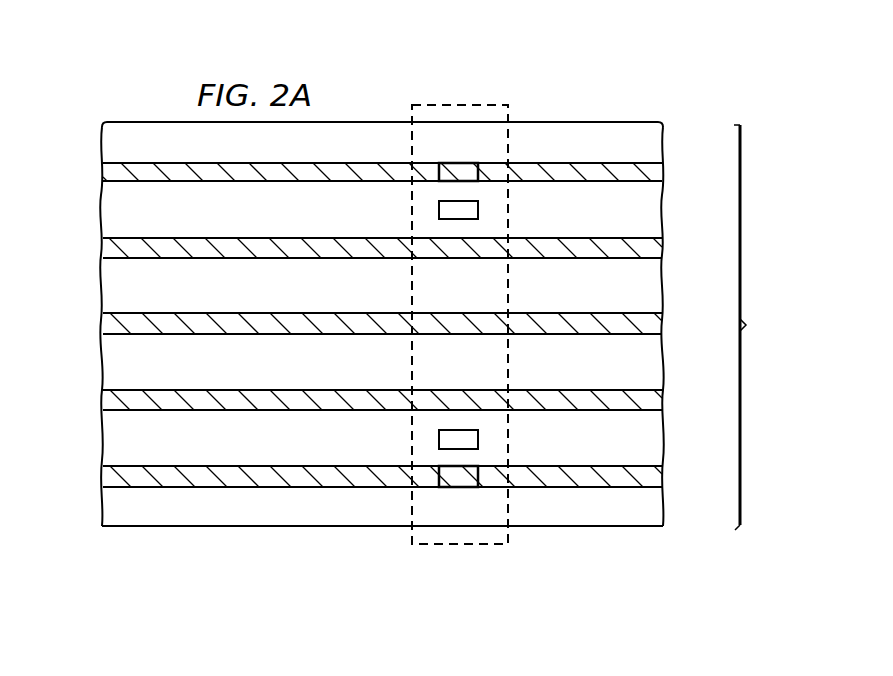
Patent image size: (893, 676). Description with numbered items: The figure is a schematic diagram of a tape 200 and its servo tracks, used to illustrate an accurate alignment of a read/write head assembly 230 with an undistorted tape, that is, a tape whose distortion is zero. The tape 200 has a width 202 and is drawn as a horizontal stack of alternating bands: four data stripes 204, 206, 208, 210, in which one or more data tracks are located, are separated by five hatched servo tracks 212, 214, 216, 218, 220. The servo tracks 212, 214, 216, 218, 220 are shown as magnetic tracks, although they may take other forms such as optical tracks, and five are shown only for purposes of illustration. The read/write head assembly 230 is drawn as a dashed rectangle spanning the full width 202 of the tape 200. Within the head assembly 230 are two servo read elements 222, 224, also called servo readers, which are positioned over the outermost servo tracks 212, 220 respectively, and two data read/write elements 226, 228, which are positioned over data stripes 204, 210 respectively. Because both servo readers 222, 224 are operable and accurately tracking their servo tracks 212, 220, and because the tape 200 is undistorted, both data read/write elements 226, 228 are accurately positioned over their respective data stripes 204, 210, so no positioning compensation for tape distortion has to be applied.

The tape 200 is at (576, 100).
The width 202 is at (760, 327).
The data stripe 204 is at (665, 211).
The data stripe 206 is at (665, 280).
The data stripe 208 is at (665, 365).
The data stripe 210 is at (665, 438).
The servo track 212 is at (102, 170).
The servo track 214 is at (102, 246).
The servo track 216 is at (102, 322).
The servo track 218 is at (102, 398).
The servo track 220 is at (102, 476).
The servo read element 222 is at (438, 165).
The servo read element 224 is at (479, 475).
The data read/write element 226 is at (479, 209).
The data read/write element 228 is at (479, 441).
The read/write head assembly 230 is at (470, 546).